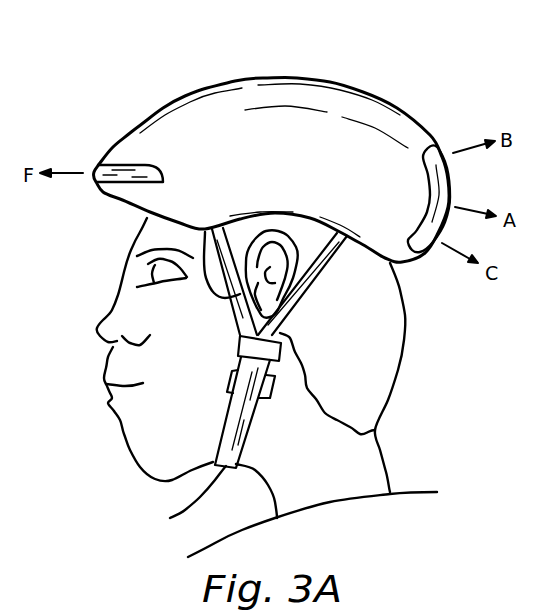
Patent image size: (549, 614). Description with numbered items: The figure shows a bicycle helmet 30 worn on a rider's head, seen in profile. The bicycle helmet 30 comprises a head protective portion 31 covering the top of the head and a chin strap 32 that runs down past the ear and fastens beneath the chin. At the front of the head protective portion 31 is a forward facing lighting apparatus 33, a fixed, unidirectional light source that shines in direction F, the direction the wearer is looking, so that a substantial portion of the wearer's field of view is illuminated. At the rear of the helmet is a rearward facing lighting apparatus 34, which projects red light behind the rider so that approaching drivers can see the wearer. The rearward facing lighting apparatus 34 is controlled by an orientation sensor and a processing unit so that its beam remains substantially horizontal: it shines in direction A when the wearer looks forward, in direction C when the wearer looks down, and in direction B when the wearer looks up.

The bicycle helmet 30 is at (285, 277).
The head protective portion 31 is at (207, 110).
The chin strap 32 is at (220, 465).
The forward facing lighting apparatus 33 is at (122, 177).
The rearward facing lighting apparatus 34 is at (432, 143).